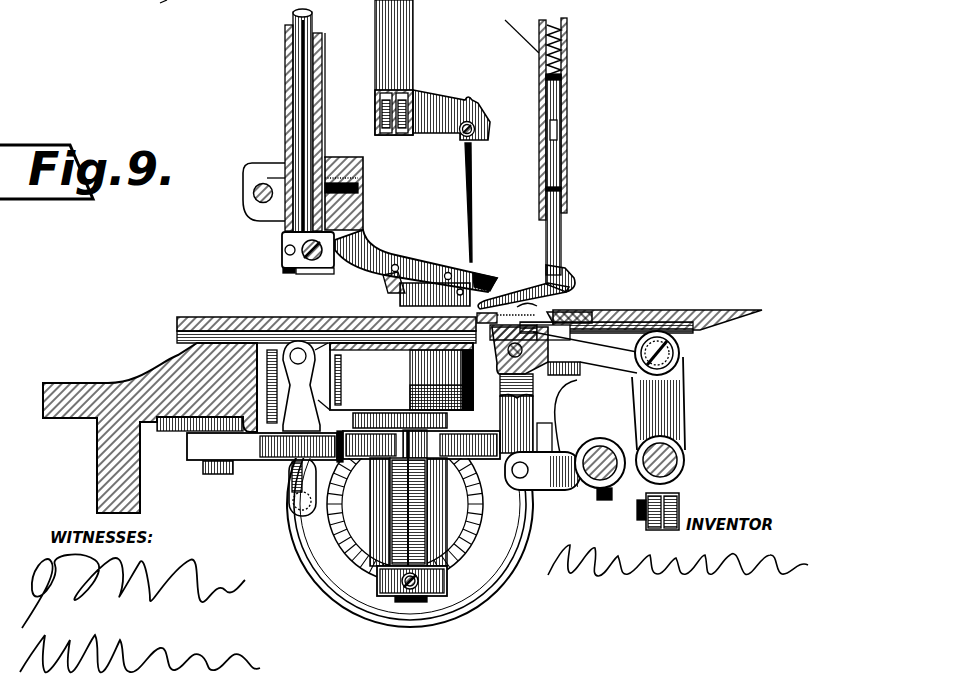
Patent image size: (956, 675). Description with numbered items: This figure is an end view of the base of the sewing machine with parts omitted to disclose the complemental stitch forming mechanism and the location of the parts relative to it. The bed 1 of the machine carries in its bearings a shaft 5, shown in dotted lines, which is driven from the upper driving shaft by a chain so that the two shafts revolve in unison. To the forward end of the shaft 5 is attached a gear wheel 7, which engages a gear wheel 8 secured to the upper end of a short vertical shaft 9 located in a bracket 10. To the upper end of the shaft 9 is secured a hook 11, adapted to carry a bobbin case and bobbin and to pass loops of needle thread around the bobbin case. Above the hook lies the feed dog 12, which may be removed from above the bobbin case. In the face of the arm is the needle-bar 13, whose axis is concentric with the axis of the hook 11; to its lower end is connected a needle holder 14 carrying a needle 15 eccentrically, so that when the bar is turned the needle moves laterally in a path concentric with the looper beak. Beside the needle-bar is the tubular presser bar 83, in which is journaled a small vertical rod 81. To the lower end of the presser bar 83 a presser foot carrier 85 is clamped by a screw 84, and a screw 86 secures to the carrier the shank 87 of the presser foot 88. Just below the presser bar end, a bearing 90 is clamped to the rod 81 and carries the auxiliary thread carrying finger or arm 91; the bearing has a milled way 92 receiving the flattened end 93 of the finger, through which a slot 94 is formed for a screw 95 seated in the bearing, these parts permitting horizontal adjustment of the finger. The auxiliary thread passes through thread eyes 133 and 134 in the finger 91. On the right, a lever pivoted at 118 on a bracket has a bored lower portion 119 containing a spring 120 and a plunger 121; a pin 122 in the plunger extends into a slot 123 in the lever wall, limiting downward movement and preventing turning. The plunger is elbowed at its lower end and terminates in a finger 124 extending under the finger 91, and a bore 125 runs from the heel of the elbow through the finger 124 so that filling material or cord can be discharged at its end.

The bed 1 is at (768, 318).
The shaft 5 is at (381, 498).
The gear wheel 7 is at (470, 557).
The gear wheel 8 is at (403, 413).
The short vertical shaft 9 is at (412, 602).
The bracket 10 is at (258, 458).
The hook 11 is at (401, 376).
The feed dog 12 is at (540, 311).
The needle-bar 13 is at (412, 47).
The needle holder 14 is at (455, 108).
The needle 15 is at (473, 192).
The vertical shaft or rod 81 is at (305, 62).
The tubular presser bar 83 is at (286, 100).
The screw 84 is at (262, 190).
The presser foot carrier 85 is at (340, 158).
The screw 86 is at (365, 184).
The shank 87 is at (372, 246).
The presser foot 88 is at (481, 275).
The bearing 90 is at (312, 274).
The auxiliary thread carrying finger or arm 91 is at (400, 265).
The way 92 is at (289, 270).
The flattened end 93 is at (283, 238).
The slot 94 is at (285, 254).
The screw 95 is at (320, 258).
The pivot 118 is at (147, 23).
The lower portion of the lever 119 is at (567, 126).
The spring 120 is at (563, 35).
The plunger 121 is at (562, 80).
The pin 122 is at (566, 192).
The slot 123 is at (567, 157).
The finger 124 is at (522, 291).
The bore 125 is at (574, 282).
The thread eye 133 is at (390, 279).
The thread eye 134 is at (448, 273).